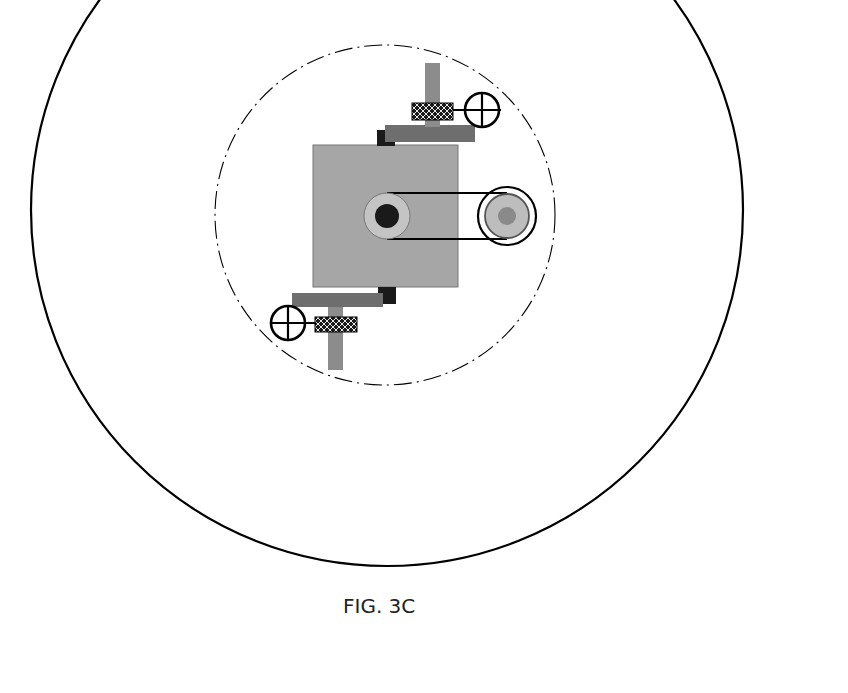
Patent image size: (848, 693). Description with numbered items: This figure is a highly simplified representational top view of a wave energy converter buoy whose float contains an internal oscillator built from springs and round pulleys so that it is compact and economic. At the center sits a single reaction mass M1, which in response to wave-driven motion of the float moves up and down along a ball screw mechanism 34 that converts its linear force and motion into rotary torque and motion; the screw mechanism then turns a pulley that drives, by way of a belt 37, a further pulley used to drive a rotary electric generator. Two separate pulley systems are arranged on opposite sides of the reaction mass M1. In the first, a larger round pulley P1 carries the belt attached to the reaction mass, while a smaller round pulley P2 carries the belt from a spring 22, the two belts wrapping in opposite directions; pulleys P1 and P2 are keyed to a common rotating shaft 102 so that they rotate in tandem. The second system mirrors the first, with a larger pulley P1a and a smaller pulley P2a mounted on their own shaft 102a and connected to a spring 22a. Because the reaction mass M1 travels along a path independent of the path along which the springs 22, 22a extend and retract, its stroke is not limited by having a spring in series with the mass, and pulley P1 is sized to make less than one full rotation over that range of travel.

The reaction mass M1 is at (334, 197).
The ball screw mechanism 34 is at (380, 218).
The belt 37 is at (463, 240).
The round pulley P1 is at (307, 299).
The round pulley P1a is at (452, 135).
The round pulley P2 is at (357, 325).
The round pulley P2a is at (407, 110).
The spring 22 is at (277, 323).
The spring 22a is at (497, 99).
The shaft 102 is at (333, 358).
The shaft 102a is at (435, 74).